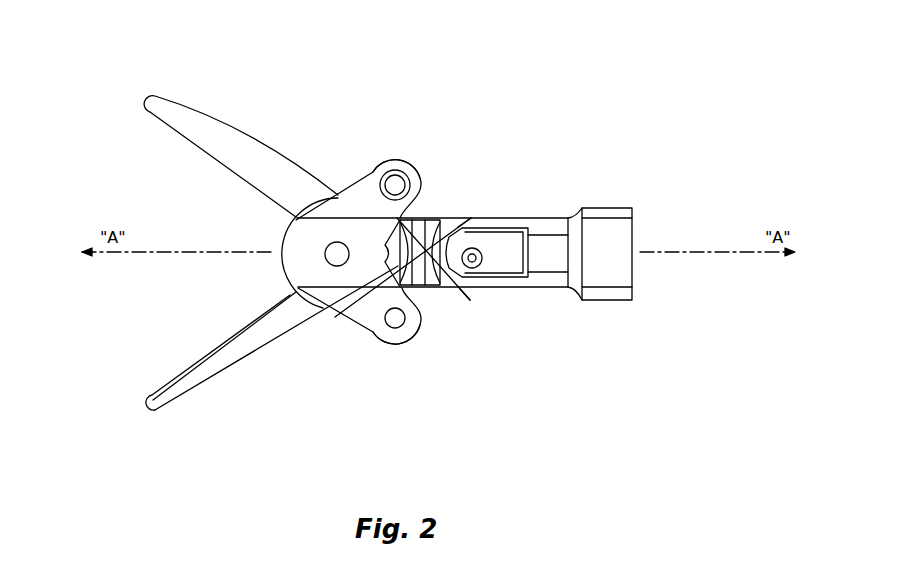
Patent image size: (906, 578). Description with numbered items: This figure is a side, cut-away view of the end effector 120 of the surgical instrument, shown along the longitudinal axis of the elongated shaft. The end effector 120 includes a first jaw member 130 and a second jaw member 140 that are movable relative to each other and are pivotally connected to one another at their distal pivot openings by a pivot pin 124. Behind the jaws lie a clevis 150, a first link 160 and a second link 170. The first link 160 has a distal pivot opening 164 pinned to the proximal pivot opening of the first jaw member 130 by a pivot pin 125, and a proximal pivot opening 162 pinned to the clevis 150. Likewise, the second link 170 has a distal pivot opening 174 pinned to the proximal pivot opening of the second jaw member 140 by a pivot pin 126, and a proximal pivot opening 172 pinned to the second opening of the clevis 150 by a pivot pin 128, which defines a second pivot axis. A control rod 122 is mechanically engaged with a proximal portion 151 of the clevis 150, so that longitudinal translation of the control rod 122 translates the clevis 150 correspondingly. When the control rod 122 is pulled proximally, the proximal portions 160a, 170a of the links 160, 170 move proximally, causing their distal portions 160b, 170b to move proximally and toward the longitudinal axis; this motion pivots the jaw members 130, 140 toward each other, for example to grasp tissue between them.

The end effector 120 is at (128, 78).
The control rod 122 is at (590, 208).
The pivot pin 124 is at (326, 256).
The pivot pin 125 is at (395, 183).
The pivot pin 126 is at (386, 320).
The pivot pin 128 is at (475, 264).
The first jaw member 130 is at (215, 405).
The second jaw member 140 is at (212, 115).
The clevis 150 is at (512, 242).
The proximal portion 151 is at (562, 240).
The first link 160 is at (437, 200).
The proximal portion 160a is at (471, 217).
The distal portion 160b is at (408, 152).
The proximal pivot opening 162 is at (474, 243).
The distal pivot opening 164 is at (371, 172).
The second link 170 is at (433, 308).
The proximal portion 170a is at (472, 300).
The distal portion 170b is at (418, 348).
The proximal pivot opening 172 is at (480, 263).
The distal pivot opening 174 is at (395, 332).